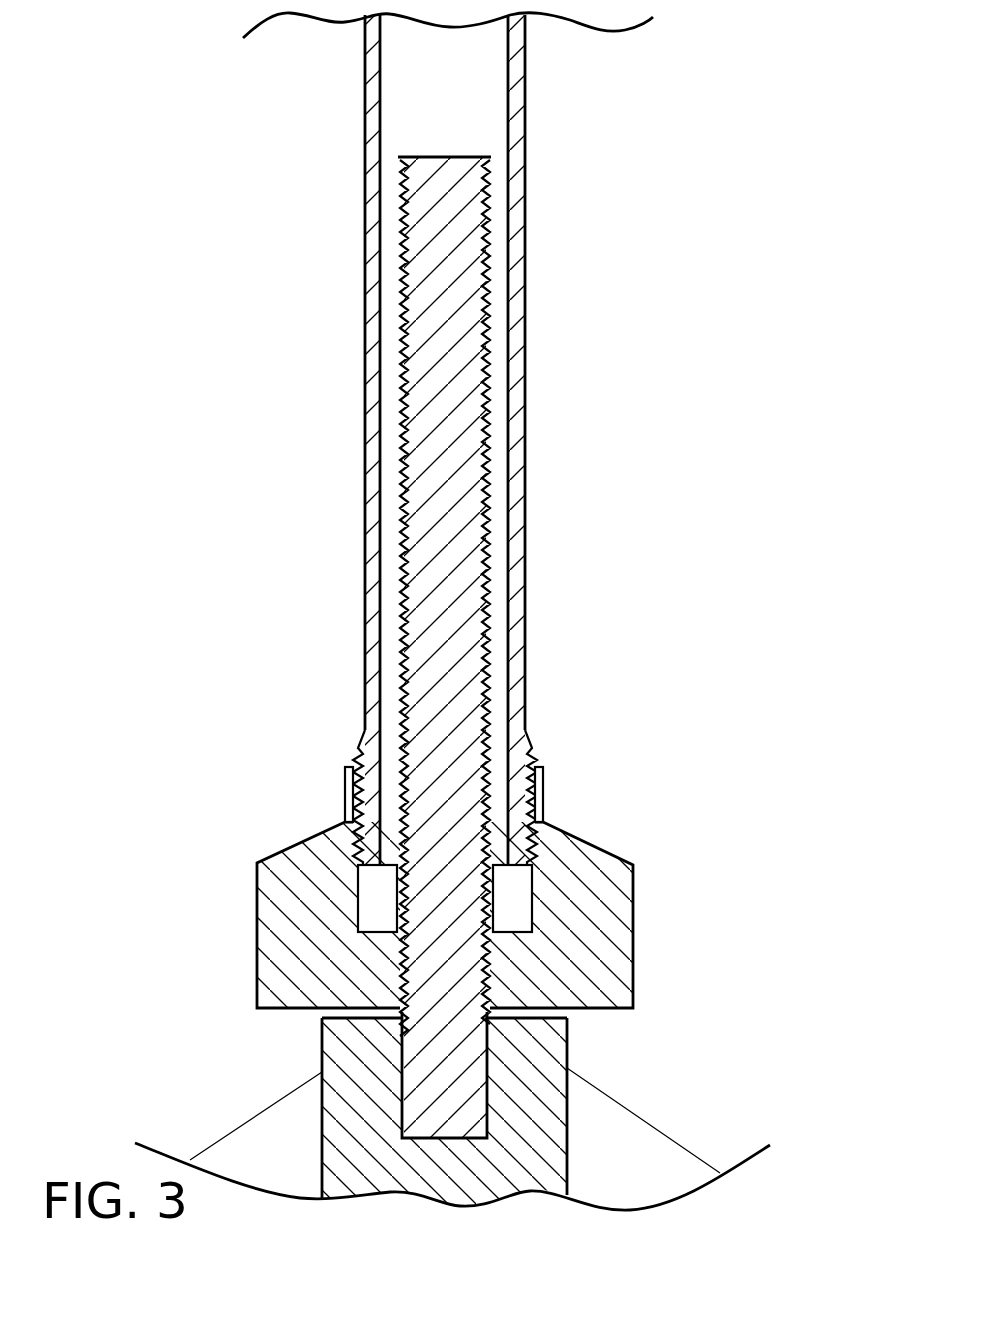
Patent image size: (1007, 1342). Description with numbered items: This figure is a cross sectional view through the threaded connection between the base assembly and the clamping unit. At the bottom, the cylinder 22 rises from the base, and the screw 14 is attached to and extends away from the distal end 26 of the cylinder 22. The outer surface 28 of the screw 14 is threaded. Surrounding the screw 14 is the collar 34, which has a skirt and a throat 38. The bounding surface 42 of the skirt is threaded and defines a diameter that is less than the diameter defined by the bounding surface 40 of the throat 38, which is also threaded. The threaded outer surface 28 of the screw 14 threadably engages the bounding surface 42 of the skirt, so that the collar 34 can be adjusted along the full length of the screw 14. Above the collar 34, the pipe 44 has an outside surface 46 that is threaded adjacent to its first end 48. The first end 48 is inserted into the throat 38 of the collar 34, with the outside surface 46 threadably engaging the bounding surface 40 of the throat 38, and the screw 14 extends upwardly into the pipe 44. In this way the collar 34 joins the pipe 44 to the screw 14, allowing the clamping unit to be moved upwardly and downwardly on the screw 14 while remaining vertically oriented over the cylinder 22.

The screw 14 is at (430, 157).
The cylinder 22 is at (322, 1047).
The distal end 26 is at (538, 1018).
The outer surface 28 is at (400, 360).
The collar 34 is at (245, 855).
The throat 38 is at (543, 778).
The bounding surface 40 is at (363, 787).
The bounding surface 42 is at (405, 958).
The pipe 44 is at (525, 330).
The outside surface 46 is at (543, 822).
The first end 48 is at (357, 870).